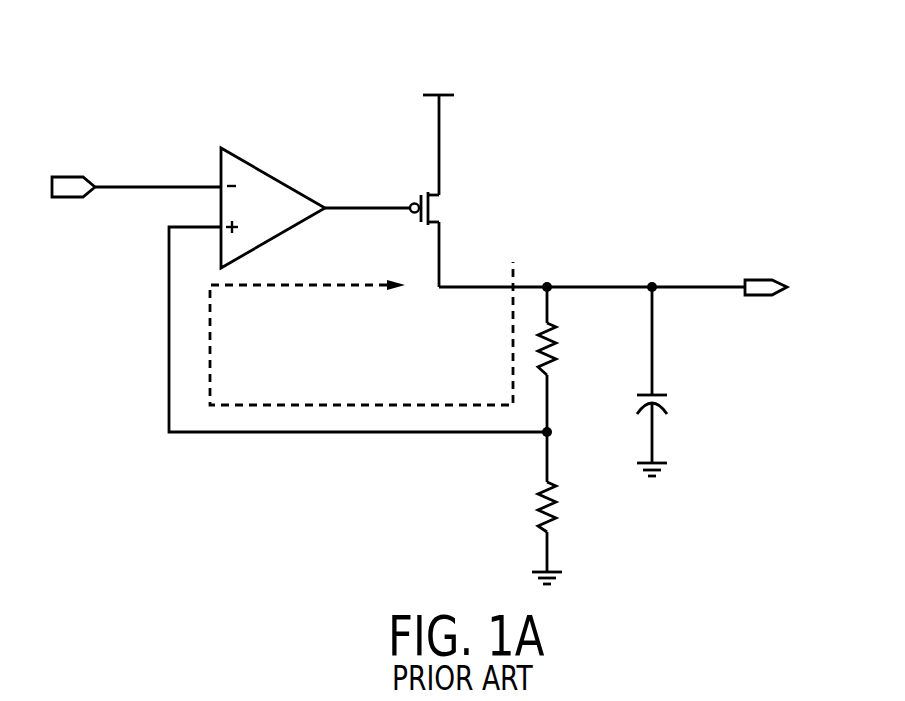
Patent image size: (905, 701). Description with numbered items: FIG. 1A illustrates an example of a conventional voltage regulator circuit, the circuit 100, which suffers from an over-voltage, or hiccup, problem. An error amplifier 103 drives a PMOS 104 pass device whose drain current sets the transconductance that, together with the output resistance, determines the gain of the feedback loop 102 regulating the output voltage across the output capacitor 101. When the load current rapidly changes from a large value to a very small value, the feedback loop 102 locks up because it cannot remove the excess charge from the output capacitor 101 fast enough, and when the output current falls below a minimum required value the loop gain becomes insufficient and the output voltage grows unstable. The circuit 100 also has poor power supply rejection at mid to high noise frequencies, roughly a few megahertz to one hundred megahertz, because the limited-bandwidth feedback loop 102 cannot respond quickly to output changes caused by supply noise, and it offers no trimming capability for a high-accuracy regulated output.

The circuit 100 is at (150, 70).
The output capacitor 101 is at (688, 396).
The feedback loop 102 is at (354, 283).
The error amplifier 103 is at (272, 176).
The PMOS 104 is at (453, 204).